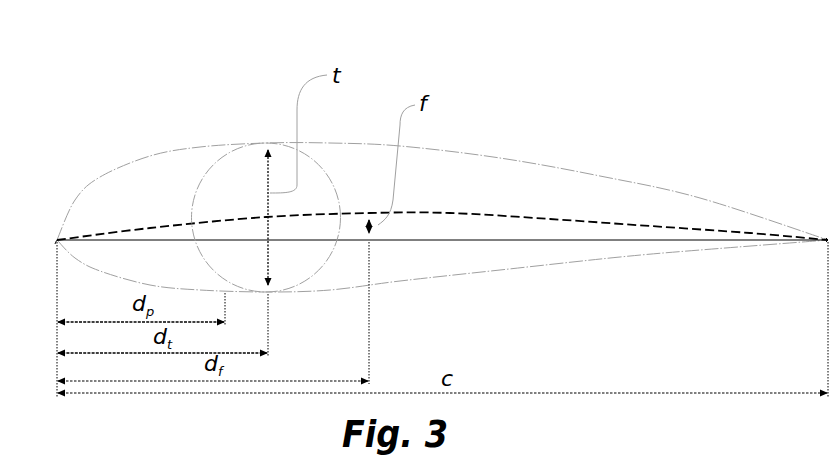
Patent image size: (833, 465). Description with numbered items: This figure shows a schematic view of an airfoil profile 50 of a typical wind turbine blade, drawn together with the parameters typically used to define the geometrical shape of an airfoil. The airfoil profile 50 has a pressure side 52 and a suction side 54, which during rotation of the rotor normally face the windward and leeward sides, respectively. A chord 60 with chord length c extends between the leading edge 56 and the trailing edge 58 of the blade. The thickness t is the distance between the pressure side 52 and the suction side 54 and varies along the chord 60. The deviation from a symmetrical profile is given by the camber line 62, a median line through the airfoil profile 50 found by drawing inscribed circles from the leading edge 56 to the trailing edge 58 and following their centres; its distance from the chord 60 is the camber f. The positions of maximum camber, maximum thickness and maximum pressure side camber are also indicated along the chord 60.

The airfoil profile 50 is at (425, 168).
The pressure side 52 is at (602, 258).
The suction side 54 is at (535, 160).
The leading edge 56 is at (57, 240).
The trailing edge 58 is at (828, 237).
The chord 60 is at (632, 240).
The camber line 62 is at (432, 213).